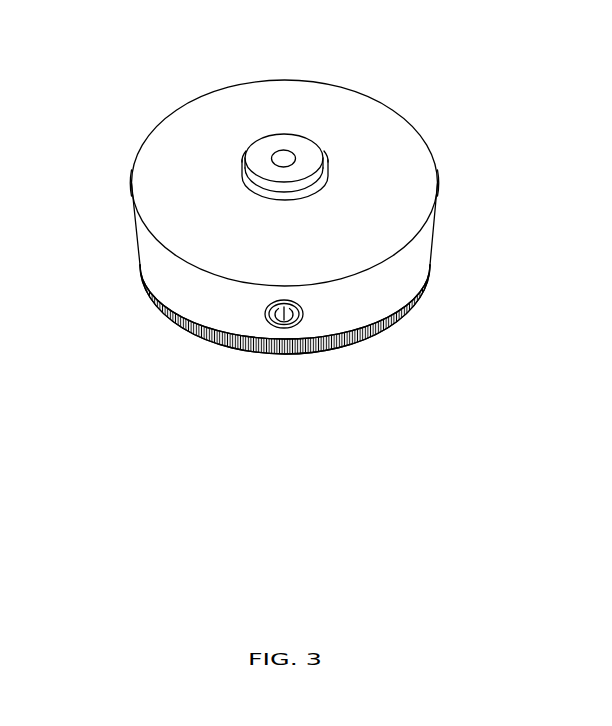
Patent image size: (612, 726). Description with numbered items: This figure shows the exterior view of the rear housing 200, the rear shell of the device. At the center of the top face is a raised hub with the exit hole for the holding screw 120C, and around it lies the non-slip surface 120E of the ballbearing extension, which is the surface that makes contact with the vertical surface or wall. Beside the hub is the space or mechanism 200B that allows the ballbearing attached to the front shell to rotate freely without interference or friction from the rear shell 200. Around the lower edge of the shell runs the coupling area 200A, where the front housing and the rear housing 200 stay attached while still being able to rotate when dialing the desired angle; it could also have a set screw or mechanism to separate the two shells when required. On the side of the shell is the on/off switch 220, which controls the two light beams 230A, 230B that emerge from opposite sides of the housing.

The rear housing 200 is at (284, 78).
The coupling area 200A is at (333, 338).
The space or mechanism for ballbearing rotation 200B is at (239, 161).
The exit hole for holding screw 120C is at (282, 158).
The non-slip surface of ballbearing extension 120E is at (297, 145).
The light beam 230A is at (129, 182).
The light beam 230B is at (440, 182).
The on/off switch 220 is at (270, 326).